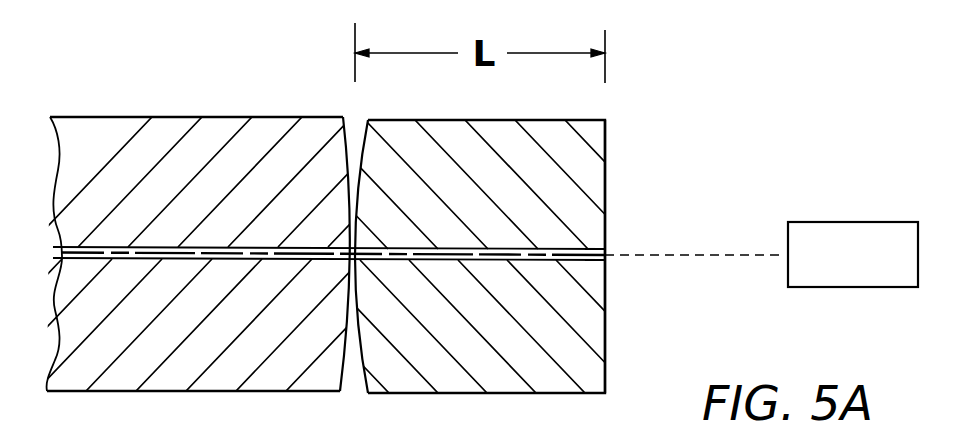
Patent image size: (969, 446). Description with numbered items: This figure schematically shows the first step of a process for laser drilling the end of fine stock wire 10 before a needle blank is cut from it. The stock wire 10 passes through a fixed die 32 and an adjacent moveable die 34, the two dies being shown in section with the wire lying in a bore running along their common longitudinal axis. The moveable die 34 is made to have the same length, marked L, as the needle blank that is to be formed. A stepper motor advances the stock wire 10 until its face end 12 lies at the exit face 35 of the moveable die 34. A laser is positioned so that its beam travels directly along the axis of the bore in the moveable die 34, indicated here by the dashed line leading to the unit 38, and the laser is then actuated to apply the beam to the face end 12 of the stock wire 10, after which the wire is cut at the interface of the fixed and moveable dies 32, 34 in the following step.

The stock wire 10 is at (114, 247).
The face end 12 is at (603, 258).
The fixed die 32 is at (207, 117).
The moveable die 34 is at (483, 393).
The exit face 35 is at (607, 162).
The optical unit 38 is at (827, 268).